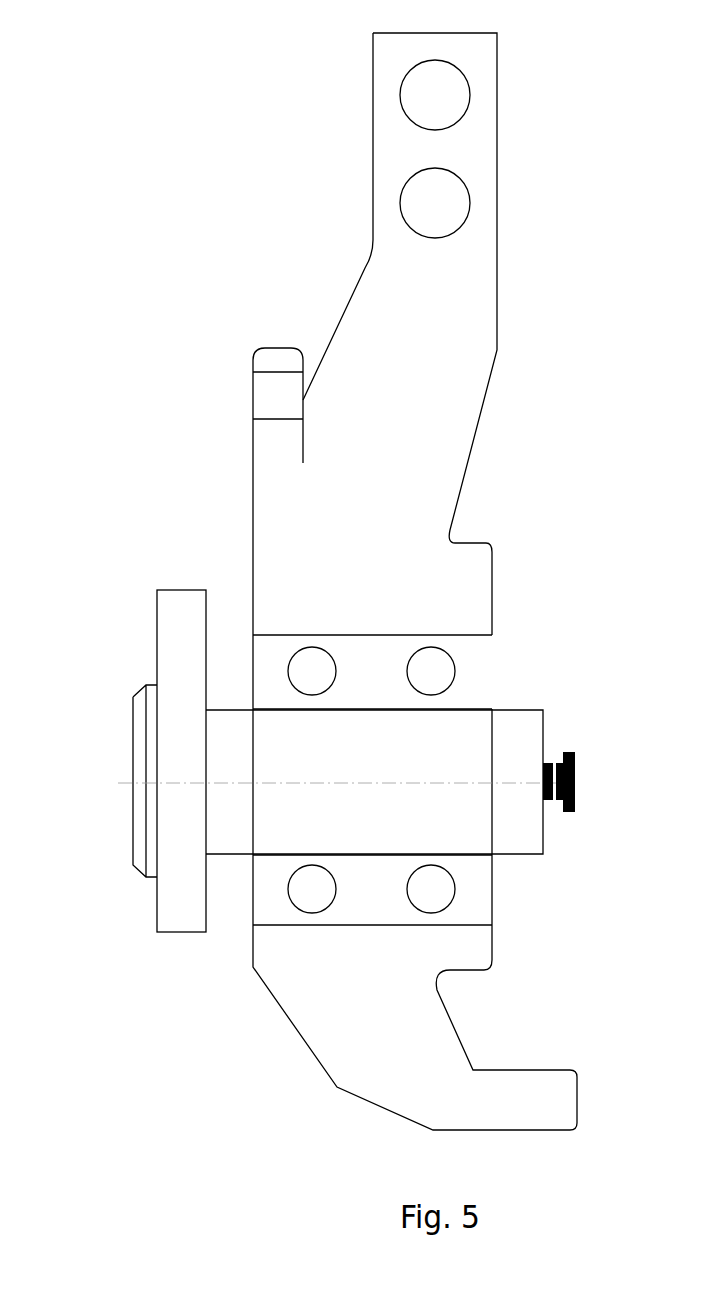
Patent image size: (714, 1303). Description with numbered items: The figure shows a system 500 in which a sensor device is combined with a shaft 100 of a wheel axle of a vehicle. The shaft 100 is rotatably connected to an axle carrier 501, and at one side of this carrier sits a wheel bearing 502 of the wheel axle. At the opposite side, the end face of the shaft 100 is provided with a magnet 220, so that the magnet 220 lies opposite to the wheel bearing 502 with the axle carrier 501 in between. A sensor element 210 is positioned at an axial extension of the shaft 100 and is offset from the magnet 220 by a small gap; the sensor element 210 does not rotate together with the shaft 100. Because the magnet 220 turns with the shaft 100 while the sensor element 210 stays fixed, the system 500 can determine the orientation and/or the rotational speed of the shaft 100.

The system 500 is at (126, 163).
The axle carrier 501 is at (494, 546).
The wheel bearing 502 is at (180, 585).
The shaft 100 is at (529, 708).
The sensor element 210 is at (576, 752).
The magnet 220 is at (550, 805).